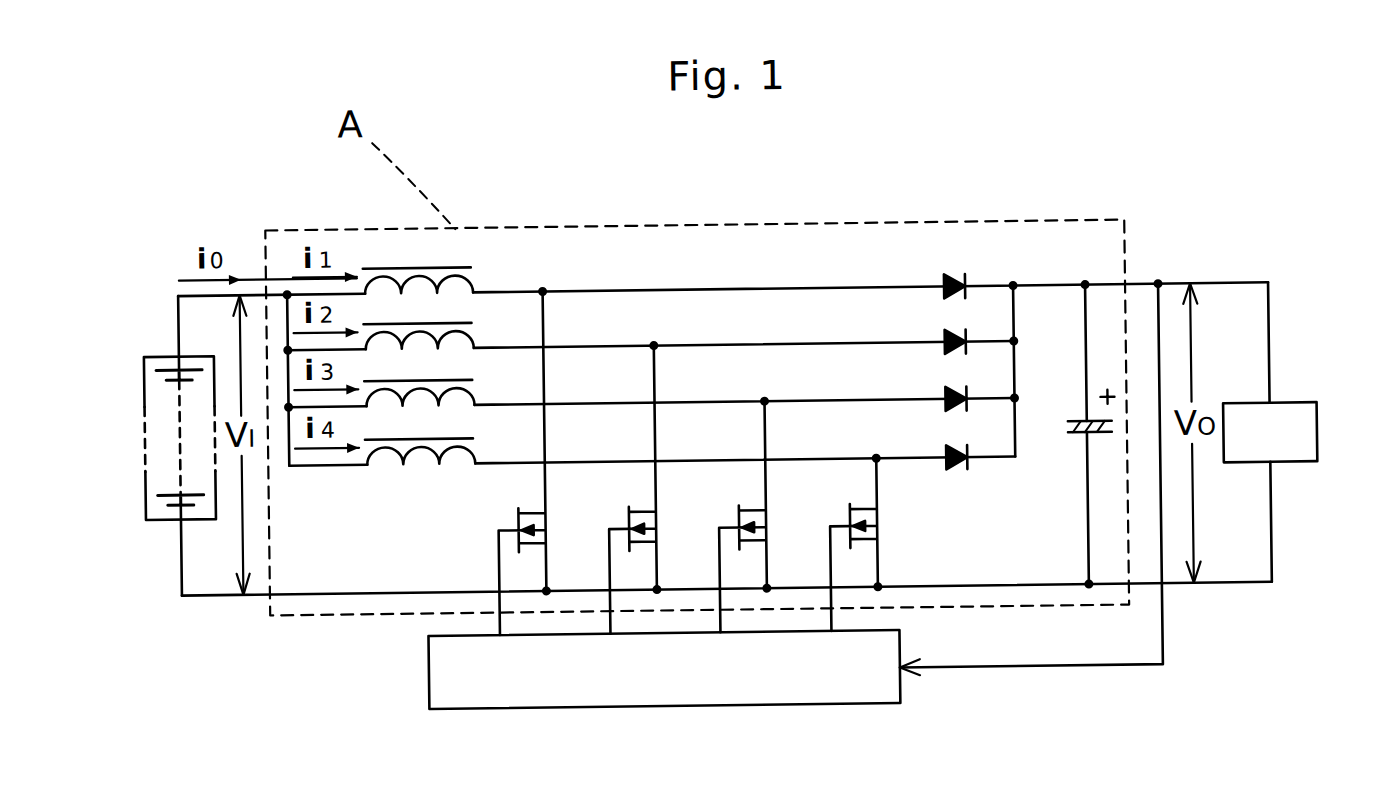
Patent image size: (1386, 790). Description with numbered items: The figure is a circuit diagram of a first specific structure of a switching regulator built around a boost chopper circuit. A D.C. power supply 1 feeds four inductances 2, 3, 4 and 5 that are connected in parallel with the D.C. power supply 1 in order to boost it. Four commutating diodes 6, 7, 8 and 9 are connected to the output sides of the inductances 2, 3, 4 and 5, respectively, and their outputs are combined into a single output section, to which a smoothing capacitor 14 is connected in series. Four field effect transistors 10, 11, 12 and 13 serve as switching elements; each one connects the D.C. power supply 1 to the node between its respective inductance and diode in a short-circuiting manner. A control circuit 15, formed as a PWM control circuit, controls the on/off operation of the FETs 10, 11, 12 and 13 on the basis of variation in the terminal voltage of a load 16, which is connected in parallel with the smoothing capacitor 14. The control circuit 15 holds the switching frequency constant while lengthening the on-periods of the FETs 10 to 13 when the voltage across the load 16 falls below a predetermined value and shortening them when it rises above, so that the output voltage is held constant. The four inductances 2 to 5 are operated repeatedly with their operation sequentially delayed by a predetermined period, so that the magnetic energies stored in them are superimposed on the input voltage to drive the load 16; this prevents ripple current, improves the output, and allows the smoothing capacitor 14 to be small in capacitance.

The D.C. power supply 1 is at (146, 480).
The inductance 2 is at (474, 282).
The inductance 3 is at (474, 338).
The inductance 4 is at (474, 395).
The inductance 5 is at (474, 454).
The commutating diode 6 is at (944, 285).
The commutating diode 7 is at (944, 340).
The commutating diode 8 is at (944, 398).
The commutating diode 9 is at (944, 456).
The field effect transistor 10 is at (520, 520).
The field effect transistor 11 is at (631, 520).
The field effect transistor 12 is at (741, 520).
The field effect transistor 13 is at (852, 520).
The smoothing capacitor 14 is at (1083, 438).
The control circuit 15 is at (897, 690).
The load 16 is at (1315, 420).